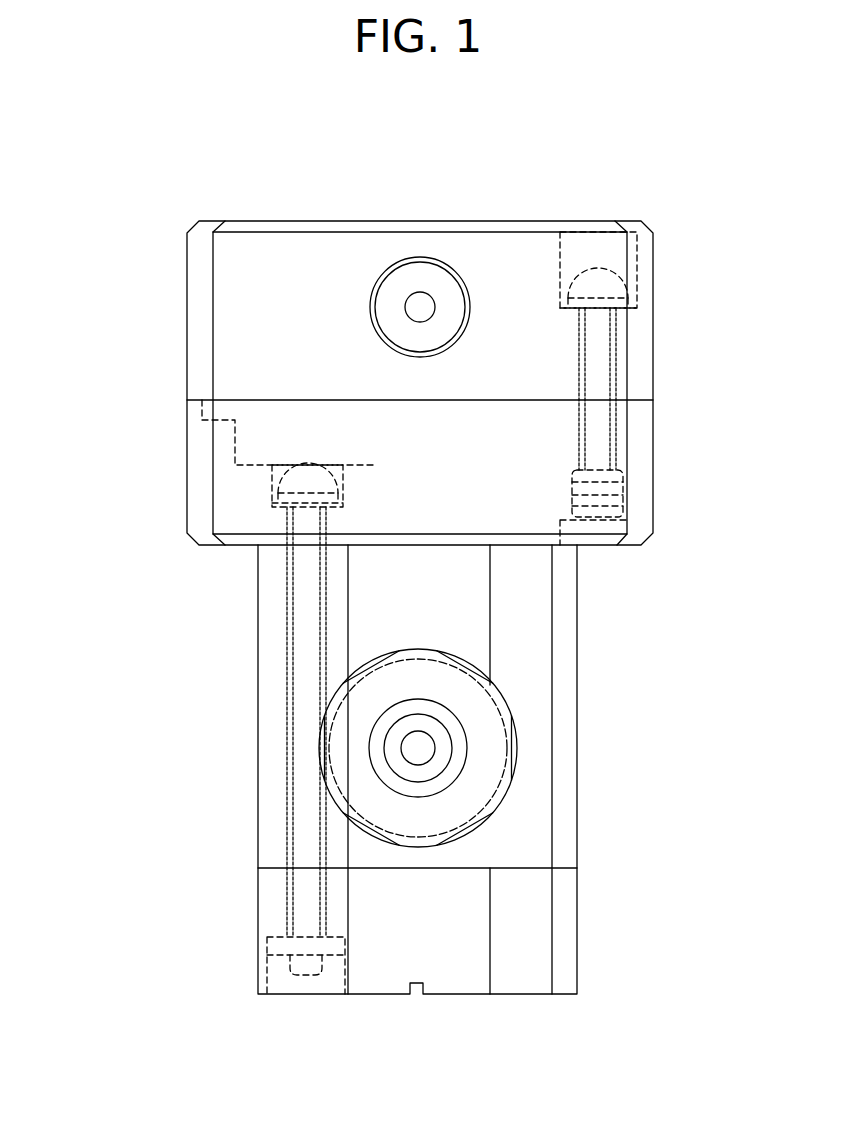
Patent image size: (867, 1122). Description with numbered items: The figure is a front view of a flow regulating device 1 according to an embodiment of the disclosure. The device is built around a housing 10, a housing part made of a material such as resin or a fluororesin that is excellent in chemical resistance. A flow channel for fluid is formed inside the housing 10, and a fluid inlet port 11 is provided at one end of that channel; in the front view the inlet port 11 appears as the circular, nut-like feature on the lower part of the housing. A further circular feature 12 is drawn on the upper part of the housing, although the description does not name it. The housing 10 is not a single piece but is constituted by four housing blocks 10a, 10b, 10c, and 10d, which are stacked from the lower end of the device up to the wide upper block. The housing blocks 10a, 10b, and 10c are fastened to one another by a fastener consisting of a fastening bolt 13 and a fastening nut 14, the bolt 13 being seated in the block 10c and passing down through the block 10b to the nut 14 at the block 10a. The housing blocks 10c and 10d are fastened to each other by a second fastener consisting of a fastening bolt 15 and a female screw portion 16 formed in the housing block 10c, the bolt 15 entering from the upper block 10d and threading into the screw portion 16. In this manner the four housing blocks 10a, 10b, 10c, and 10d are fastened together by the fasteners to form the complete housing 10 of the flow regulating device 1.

The flow regulating device 1 is at (638, 135).
The housing 10 is at (585, 678).
The housing block 10a is at (258, 956).
The housing block 10b is at (258, 712).
The housing block 10c is at (187, 479).
The housing block 10d is at (187, 314).
The fluid inlet port 11 is at (420, 748).
The circular opening 12 is at (420, 305).
The fastening bolt 13 is at (306, 487).
The fastening nut 14 is at (327, 962).
The fastening bolt 15 is at (597, 290).
The female screw portion 16 is at (613, 480).